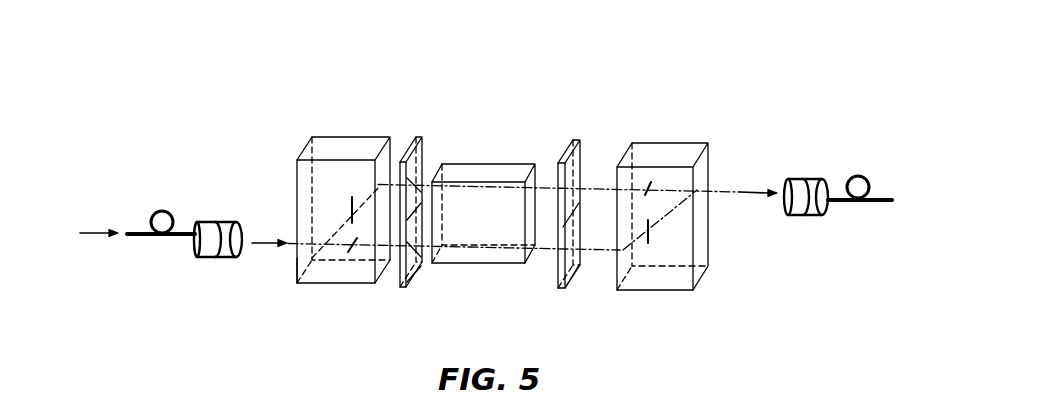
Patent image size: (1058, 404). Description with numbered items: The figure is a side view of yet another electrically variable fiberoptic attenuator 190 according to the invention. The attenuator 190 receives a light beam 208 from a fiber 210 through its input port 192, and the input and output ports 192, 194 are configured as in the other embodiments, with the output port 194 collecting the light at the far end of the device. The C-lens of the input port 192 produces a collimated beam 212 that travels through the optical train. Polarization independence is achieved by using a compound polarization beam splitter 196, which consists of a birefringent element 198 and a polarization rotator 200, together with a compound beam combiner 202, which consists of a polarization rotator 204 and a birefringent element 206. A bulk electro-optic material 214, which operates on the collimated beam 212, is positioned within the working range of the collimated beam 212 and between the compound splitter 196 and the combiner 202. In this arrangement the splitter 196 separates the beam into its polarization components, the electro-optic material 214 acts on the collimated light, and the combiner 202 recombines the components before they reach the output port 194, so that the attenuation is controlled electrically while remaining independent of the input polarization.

The electrically variable fiberoptic attenuator 190 is at (175, 73).
The input port 192 is at (207, 187).
The output port 194 is at (808, 139).
The compound polarization beam splitter 196 is at (352, 113).
The birefringent element 198 is at (297, 264).
The polarization rotator 200 is at (413, 288).
The compound beam combiner 202 is at (582, 119).
The polarization rotator 204 is at (577, 278).
The birefringent element 206 is at (633, 144).
The light beam 208 is at (106, 233).
The fiber 210 is at (172, 240).
The collimated beam 212 is at (255, 242).
The bulk electro-optic material 214 is at (480, 164).